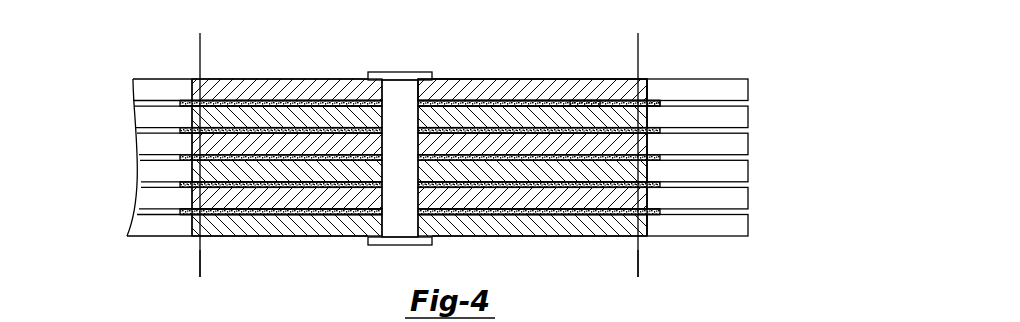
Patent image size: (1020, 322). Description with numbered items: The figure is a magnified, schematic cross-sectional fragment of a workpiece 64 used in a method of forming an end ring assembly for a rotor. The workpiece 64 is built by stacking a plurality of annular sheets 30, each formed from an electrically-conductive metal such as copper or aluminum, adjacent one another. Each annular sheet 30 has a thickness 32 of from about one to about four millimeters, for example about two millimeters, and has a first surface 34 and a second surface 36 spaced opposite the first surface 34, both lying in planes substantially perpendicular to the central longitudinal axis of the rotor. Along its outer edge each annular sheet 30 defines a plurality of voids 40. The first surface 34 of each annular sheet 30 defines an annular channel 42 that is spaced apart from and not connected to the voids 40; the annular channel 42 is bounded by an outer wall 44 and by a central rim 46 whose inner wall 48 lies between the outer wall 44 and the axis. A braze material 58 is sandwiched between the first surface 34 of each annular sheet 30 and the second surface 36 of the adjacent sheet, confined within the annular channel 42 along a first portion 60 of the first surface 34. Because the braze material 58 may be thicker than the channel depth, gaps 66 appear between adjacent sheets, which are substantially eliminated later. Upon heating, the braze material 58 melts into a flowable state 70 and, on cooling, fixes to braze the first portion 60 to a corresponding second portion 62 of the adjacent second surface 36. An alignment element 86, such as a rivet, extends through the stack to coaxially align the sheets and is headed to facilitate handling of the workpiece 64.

The annular sheet 30 is at (750, 89).
The thickness 32 is at (780, 267).
The first surface 34 is at (216, 103).
The second surface 36 is at (287, 134).
The void 40 is at (695, 254).
The annular channel 42 is at (630, 109).
The outer wall 44 is at (628, 160).
The central rim 46 is at (200, 162).
The inner wall 48 is at (204, 162).
The braze material 58 is at (585, 102).
The first portion 60 is at (636, 45).
The second portion 62 is at (636, 263).
The workpiece 64 is at (126, 70).
The gap 66 is at (125, 100).
The flowable state 70 is at (496, 96).
The alignment element 86 is at (357, 269).